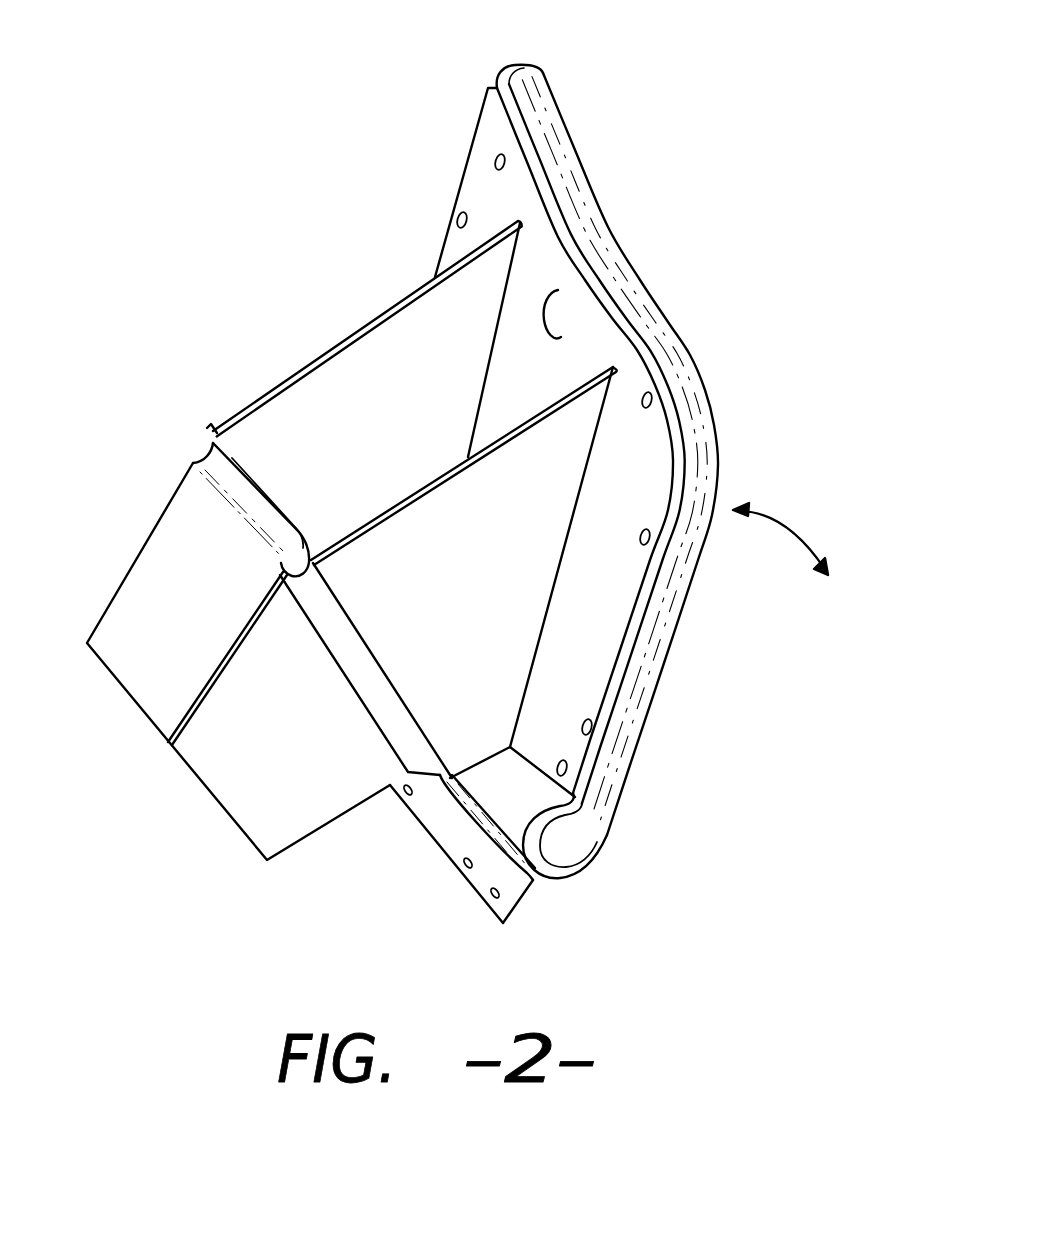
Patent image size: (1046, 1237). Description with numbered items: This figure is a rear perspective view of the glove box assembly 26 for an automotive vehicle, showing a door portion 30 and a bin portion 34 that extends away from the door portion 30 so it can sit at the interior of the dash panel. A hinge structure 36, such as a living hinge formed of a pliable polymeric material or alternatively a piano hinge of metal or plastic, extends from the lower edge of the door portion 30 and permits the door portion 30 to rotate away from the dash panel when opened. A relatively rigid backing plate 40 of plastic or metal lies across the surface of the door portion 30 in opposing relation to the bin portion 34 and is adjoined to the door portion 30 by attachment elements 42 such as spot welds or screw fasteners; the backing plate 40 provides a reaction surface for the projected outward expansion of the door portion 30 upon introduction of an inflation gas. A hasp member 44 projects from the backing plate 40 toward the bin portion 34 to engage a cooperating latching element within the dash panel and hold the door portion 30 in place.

The glove box assembly 26 is at (613, 120).
The door portion 30 is at (718, 407).
The bin portion 34 is at (283, 385).
The hinge structure 36 is at (527, 897).
The backing plate 40 is at (473, 135).
The attachment elements 42 is at (455, 220).
The hasp member 44 is at (547, 287).